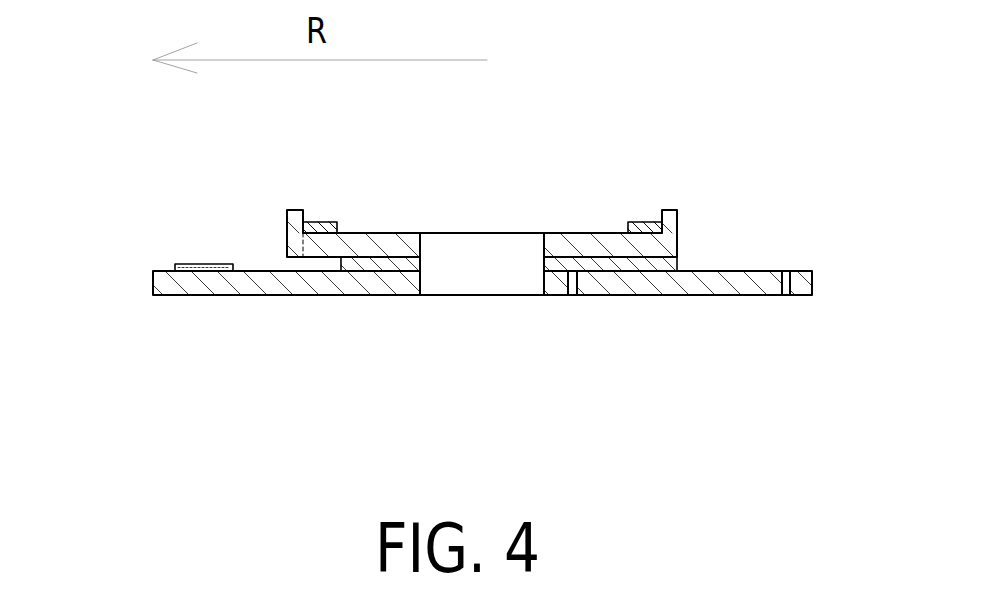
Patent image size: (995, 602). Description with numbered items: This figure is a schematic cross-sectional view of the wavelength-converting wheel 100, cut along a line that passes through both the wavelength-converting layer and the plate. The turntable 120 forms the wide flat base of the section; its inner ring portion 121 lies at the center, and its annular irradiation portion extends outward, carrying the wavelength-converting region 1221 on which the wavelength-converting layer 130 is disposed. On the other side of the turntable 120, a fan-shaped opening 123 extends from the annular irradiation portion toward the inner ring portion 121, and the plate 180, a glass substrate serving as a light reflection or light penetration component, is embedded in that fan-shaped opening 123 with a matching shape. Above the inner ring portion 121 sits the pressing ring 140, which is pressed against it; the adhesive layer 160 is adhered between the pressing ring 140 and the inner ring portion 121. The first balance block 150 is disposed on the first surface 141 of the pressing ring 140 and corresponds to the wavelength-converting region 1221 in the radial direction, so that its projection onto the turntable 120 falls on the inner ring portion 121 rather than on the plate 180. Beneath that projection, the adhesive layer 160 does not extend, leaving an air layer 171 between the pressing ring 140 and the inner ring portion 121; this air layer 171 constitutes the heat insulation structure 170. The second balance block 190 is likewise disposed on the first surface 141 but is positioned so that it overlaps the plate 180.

The wavelength-converting wheel 100 is at (115, 95).
The turntable 120 is at (162, 285).
The wavelength-converting region 1221 is at (196, 281).
The fan-shaped opening 123 is at (790, 285).
The wavelength-converting layer 130 is at (203, 264).
The pressing ring 140 is at (562, 244).
The first surface 141 is at (407, 223).
The first balance block 150 is at (323, 221).
The adhesive layer 160 is at (400, 262).
The inner ring portion 121 is at (366, 259).
The heat insulation structure 170 is at (280, 361).
The air layer 171 is at (294, 265).
The plate 180 is at (703, 284).
The second balance block 190 is at (646, 230).